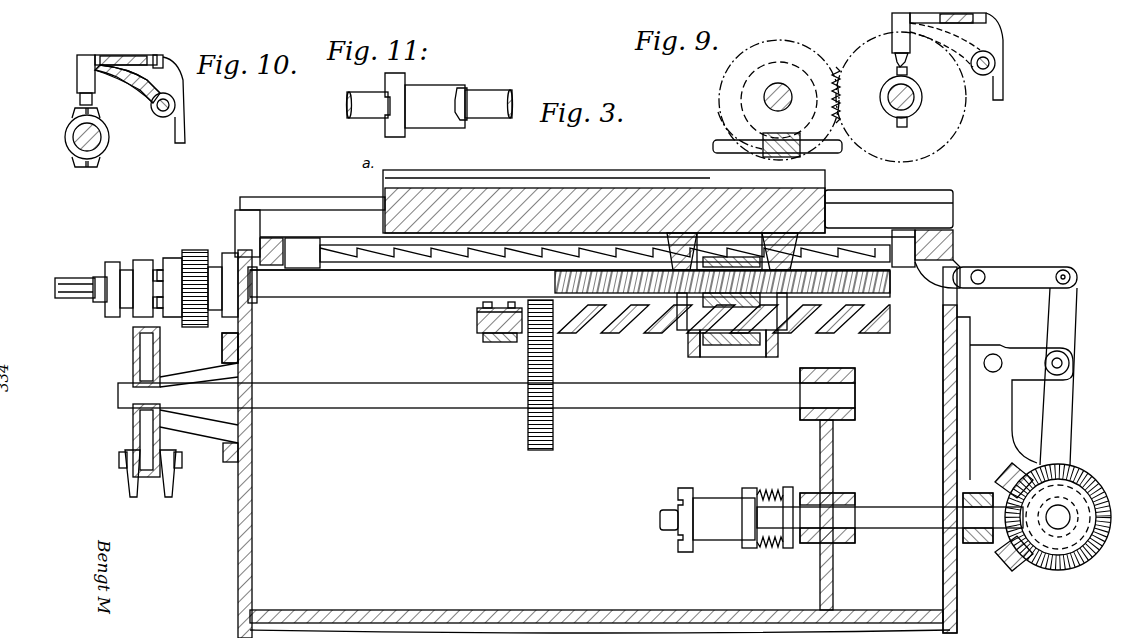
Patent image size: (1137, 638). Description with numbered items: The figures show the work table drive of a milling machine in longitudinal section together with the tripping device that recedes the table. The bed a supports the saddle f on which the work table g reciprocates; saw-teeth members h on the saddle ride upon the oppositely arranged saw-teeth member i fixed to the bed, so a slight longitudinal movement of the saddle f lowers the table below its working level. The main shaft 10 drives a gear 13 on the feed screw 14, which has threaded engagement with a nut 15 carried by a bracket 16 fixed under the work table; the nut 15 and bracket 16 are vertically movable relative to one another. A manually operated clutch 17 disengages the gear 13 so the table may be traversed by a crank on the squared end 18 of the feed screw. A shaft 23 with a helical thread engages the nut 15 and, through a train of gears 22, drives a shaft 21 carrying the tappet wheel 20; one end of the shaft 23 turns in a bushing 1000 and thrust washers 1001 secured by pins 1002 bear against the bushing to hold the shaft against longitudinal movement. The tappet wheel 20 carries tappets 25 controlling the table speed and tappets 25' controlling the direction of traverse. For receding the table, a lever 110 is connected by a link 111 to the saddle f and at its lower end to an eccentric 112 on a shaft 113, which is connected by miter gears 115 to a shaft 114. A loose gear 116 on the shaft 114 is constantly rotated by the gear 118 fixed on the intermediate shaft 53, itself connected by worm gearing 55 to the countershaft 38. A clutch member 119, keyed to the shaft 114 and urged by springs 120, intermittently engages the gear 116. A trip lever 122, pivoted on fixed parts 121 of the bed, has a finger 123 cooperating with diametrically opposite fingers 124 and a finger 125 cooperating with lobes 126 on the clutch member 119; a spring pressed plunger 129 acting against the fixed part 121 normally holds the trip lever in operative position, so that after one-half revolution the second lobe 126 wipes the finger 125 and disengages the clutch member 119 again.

In FIG. 10, the trip lever 122 is at (95, 58).
In FIG. 9, the trip lever 122 is at (892, 22).
In FIG. 3, the trip lever 122 is at (502, 632).
In FIG. 10, the spring pressed plunger 129 is at (157, 55).
In FIG. 10, the fixed parts of the bed 121 is at (185, 123).
In FIG. 9, the fixed parts of the bed 121 is at (1003, 97).
In FIG. 10, the finger 125 is at (79, 98).
In FIG. 10, the clutch member 119 is at (109, 147).
In FIG. 11, the clutch member 119 is at (435, 95).
In FIG. 3, the clutch member 119 is at (720, 497).
In FIG. 10, the lobes 126 is at (75, 112).
In FIG. 11, the lobes 126 is at (460, 114).
In FIG. 3, the lobes 126 is at (750, 549).
In FIG. 11, the shaft 114 is at (495, 97).
In FIG. 3, the shaft 114 is at (898, 518).
In FIG. 9, the gear 118 is at (757, 55).
In FIG. 9, the intermediate shaft 53 is at (782, 83).
In FIG. 9, the worm gearing 55 is at (730, 130).
In FIG. 9, the countershaft 38 is at (720, 150).
In FIG. 9, the loose gear 116 is at (943, 135).
In FIG. 9, the fingers 124 is at (920, 88).
In FIG. 9, the finger 123 is at (897, 60).
In FIG. 3, the bed a is at (245, 513).
In FIG. 3, the work table g is at (385, 175).
In FIG. 3, the saddle f is at (953, 243).
In FIG. 3, the saw-teeth members h is at (407, 253).
In FIG. 3, the saw-teeth member i is at (453, 260).
In FIG. 3, the feed screw 14 is at (348, 290).
In FIG. 3, the shaft 23 is at (650, 327).
In FIG. 3, the bracket 16 is at (732, 304).
In FIG. 3, the nut 15 is at (733, 352).
In FIG. 3, the train of gears 22 is at (553, 340).
In FIG. 3, the bushing 1000 is at (503, 342).
In FIG. 3, the thrust washers 1001 is at (505, 340).
In FIG. 3, the pins 1002 is at (480, 305).
In FIG. 3, the shaft 21 is at (333, 408).
In FIG. 3, the tappet wheel 20 is at (133, 373).
In FIG. 3, the tappets 25 is at (114, 475).
In FIG. 3, the tappets 25' is at (181, 476).
In FIG. 3, the squared end 18 is at (72, 279).
In FIG. 3, the clutch 17 is at (140, 267).
In FIG. 3, the gear 13 is at (193, 253).
In FIG. 3, the link 111 is at (1003, 270).
In FIG. 3, the lever 110 is at (1068, 320).
In FIG. 3, the shaft 113 is at (1085, 538).
In FIG. 3, the eccentric 112 is at (1058, 570).
In FIG. 3, the miter gears 115 is at (1048, 568).
In FIG. 3, the springs 120 is at (772, 492).
In FIG. 3, the main shaft 10 is at (613, 632).